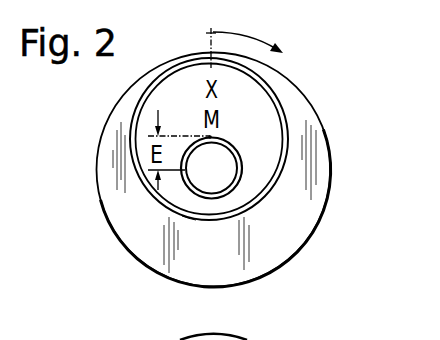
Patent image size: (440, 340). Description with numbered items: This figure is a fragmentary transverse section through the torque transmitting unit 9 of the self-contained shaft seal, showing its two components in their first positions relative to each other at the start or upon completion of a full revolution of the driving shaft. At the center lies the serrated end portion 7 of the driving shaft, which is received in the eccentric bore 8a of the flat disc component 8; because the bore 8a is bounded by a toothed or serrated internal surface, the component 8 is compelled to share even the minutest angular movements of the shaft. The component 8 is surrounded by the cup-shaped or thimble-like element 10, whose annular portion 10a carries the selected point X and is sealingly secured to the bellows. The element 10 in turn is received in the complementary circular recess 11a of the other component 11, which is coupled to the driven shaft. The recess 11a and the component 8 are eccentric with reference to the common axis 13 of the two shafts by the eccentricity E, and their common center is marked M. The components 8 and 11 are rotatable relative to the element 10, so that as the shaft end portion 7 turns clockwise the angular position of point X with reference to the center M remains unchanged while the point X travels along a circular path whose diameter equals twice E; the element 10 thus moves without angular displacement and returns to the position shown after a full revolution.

The end portion of the driving shaft 7 is at (231, 190).
The component of the torque transmitting unit 8 is at (267, 142).
The eccentric bore 8a is at (242, 157).
The torque transmitting unit 9 is at (88, 135).
The cup-shaped element 10 is at (138, 193).
The annular portion of the cup-shaped element 10a is at (268, 82).
The component of the torque transmitting unit 11 is at (255, 253).
The recess 11a is at (193, 224).
The common axis of the shafts 13 is at (241, 171).